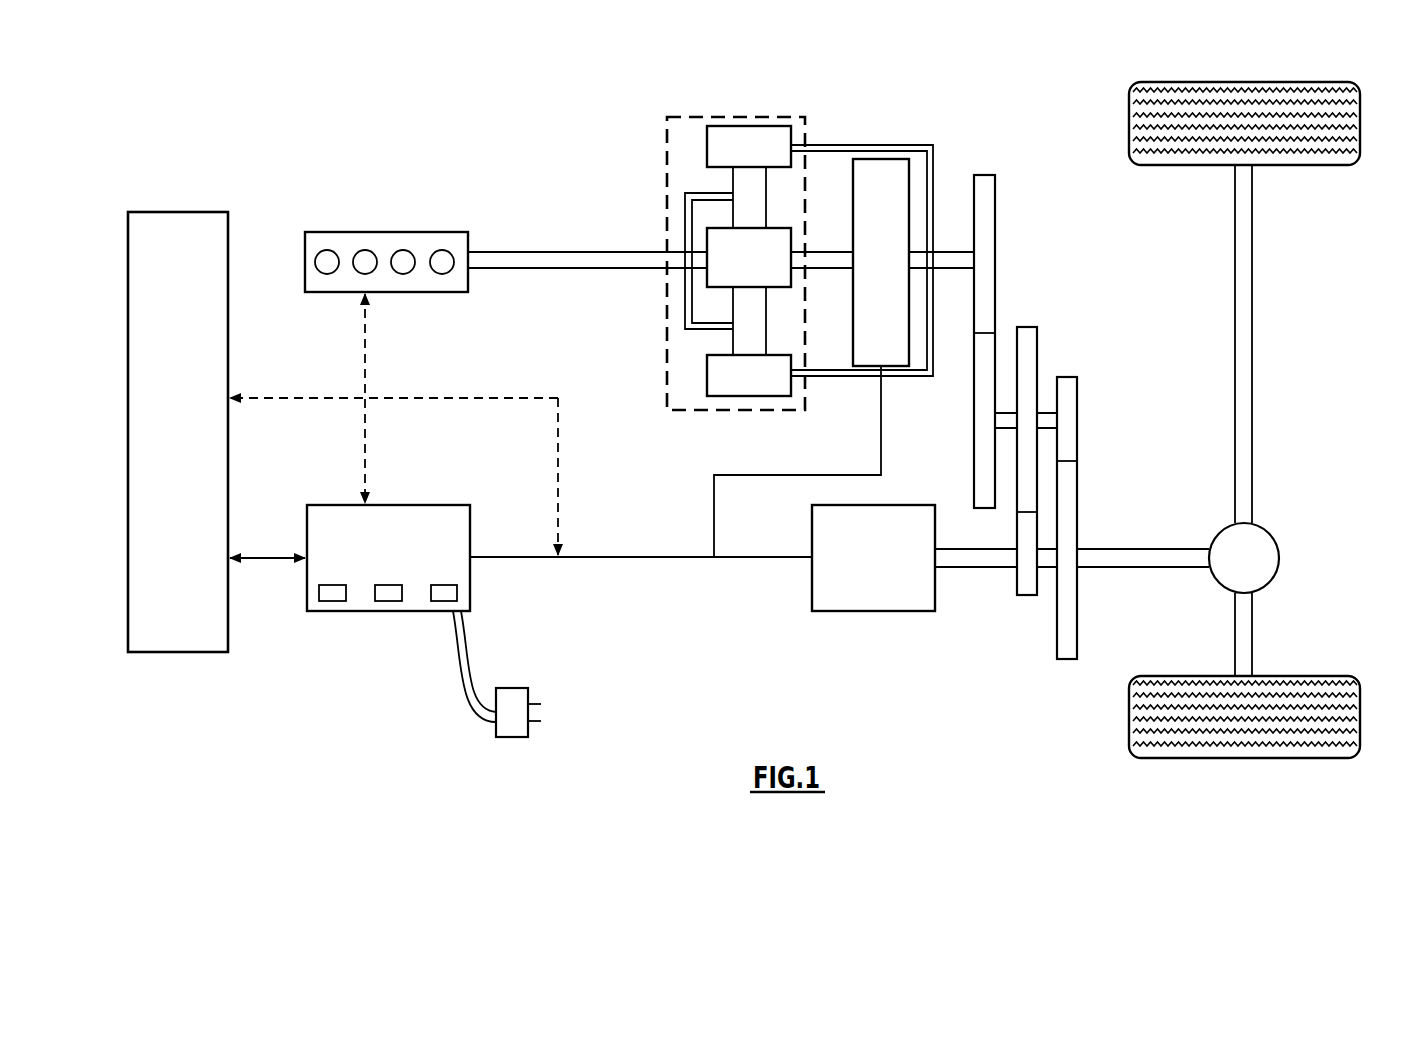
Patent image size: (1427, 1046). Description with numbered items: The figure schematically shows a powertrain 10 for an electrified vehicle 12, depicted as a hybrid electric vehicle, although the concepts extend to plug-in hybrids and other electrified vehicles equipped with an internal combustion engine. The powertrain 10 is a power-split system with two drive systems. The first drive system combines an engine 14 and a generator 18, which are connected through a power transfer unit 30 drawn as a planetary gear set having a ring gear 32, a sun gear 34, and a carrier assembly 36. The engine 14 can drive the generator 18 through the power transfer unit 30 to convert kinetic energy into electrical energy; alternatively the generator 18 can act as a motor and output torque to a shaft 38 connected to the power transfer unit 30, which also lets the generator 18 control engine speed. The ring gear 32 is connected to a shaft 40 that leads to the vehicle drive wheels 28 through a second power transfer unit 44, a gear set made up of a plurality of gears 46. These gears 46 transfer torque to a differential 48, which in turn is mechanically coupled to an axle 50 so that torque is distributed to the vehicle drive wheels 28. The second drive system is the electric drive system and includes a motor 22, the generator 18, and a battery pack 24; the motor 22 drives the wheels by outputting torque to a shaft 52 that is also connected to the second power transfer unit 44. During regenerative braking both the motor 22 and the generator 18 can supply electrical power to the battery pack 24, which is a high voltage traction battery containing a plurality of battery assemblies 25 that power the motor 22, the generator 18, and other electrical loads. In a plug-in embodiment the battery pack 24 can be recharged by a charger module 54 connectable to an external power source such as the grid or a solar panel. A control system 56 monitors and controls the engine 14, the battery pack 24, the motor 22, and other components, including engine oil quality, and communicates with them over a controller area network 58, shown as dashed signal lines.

The powertrain 10 is at (524, 141).
The electrified vehicle 12 is at (903, 76).
The engine 14 is at (322, 232).
The generator 18 is at (865, 159).
The motor 22 is at (935, 593).
The battery pack 24 is at (323, 505).
The battery assemblies 25 is at (346, 592).
The vehicle drive wheels 28 is at (1360, 712).
The power transfer unit 30 is at (665, 374).
The ring gear 32 is at (707, 146).
The sun gear 34 is at (707, 237).
The carrier assembly 36 is at (684, 317).
The shaft 38 is at (822, 251).
The shaft 40 is at (953, 255).
The second power transfer unit 44 is at (1082, 440).
The gears 46 is at (995, 297).
The differential 48 is at (1275, 578).
The axle 50 is at (1253, 333).
The shaft 52 is at (985, 567).
The charger module 54 is at (498, 684).
The control system 56 is at (228, 357).
The controller area network 58 is at (377, 393).